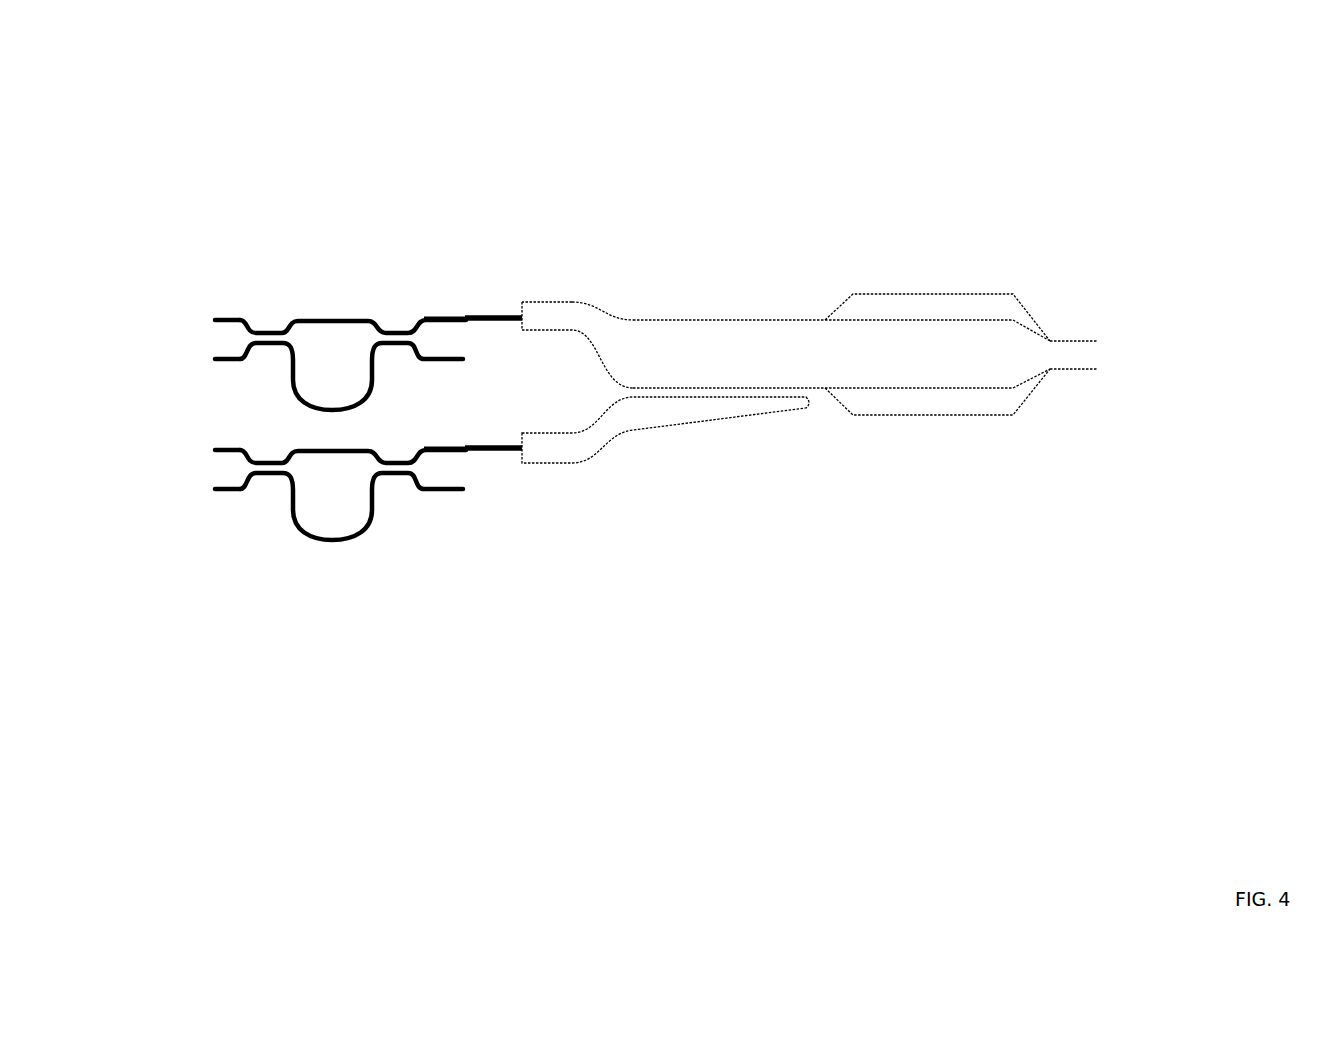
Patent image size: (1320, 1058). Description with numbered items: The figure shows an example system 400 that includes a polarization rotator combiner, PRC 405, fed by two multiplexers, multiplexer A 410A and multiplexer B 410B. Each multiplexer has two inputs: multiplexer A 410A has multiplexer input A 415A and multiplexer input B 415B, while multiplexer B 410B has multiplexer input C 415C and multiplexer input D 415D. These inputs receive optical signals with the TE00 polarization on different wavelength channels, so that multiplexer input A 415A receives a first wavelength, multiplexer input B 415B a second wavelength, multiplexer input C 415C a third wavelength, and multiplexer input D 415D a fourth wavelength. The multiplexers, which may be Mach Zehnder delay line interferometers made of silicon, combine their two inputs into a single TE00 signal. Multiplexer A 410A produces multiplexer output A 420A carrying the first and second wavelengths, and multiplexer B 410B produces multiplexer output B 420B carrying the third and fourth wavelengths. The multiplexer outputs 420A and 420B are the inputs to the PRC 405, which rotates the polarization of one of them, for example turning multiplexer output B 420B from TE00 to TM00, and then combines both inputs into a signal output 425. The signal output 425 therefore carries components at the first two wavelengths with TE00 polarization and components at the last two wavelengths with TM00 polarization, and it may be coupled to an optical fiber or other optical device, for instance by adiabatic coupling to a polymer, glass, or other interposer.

The system 400 is at (1095, 68).
The PRC 405 is at (870, 281).
The multiplexer A 410A is at (366, 256).
The multiplexer B 410B is at (387, 556).
The multiplexer input A 415A is at (199, 315).
The multiplexer input B 415B is at (199, 363).
The multiplexer input C 415C is at (199, 445).
The multiplexer input D 415D is at (200, 494).
The multiplexer output A 420A is at (493, 297).
The multiplexer output B 420B is at (494, 429).
The signal output 425 is at (1081, 329).